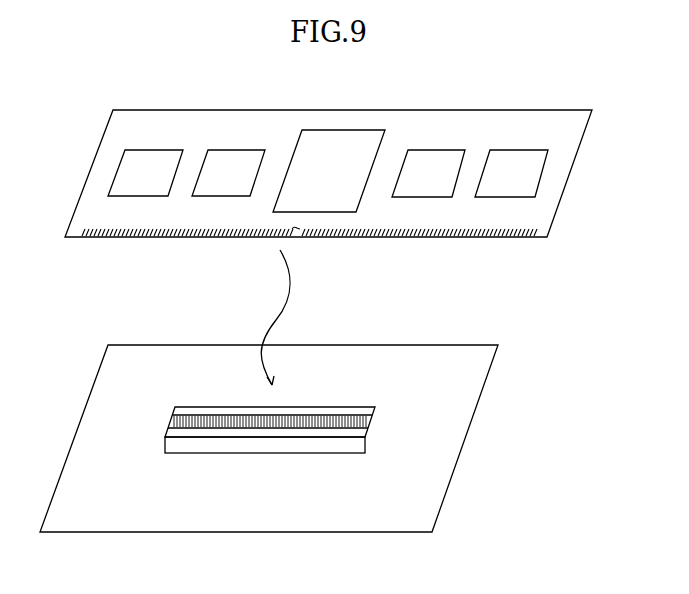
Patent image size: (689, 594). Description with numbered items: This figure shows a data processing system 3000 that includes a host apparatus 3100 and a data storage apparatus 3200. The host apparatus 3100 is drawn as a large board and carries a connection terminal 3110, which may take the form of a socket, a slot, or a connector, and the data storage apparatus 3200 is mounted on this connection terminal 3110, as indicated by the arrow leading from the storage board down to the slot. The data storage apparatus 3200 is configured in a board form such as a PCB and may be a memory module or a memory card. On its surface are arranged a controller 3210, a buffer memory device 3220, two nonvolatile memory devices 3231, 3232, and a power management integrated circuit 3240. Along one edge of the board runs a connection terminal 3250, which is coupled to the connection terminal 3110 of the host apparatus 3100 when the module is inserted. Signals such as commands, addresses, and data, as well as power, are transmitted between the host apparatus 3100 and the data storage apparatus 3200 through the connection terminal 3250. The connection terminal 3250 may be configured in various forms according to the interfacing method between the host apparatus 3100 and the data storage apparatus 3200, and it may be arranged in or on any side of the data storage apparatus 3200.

The data processing system 3000 is at (198, 81).
The host apparatus 3100 is at (269, 438).
The connection terminal 3110 is at (392, 402).
The data storage apparatus 3200 is at (328, 192).
The controller 3210 is at (329, 171).
The buffer memory device 3220 is at (228, 173).
The nonvolatile memory device 3231 is at (428, 173).
The nonvolatile memory device 3232 is at (511, 173).
The power management integrated circuit 3240 is at (145, 173).
The connection terminal 3250 is at (93, 237).